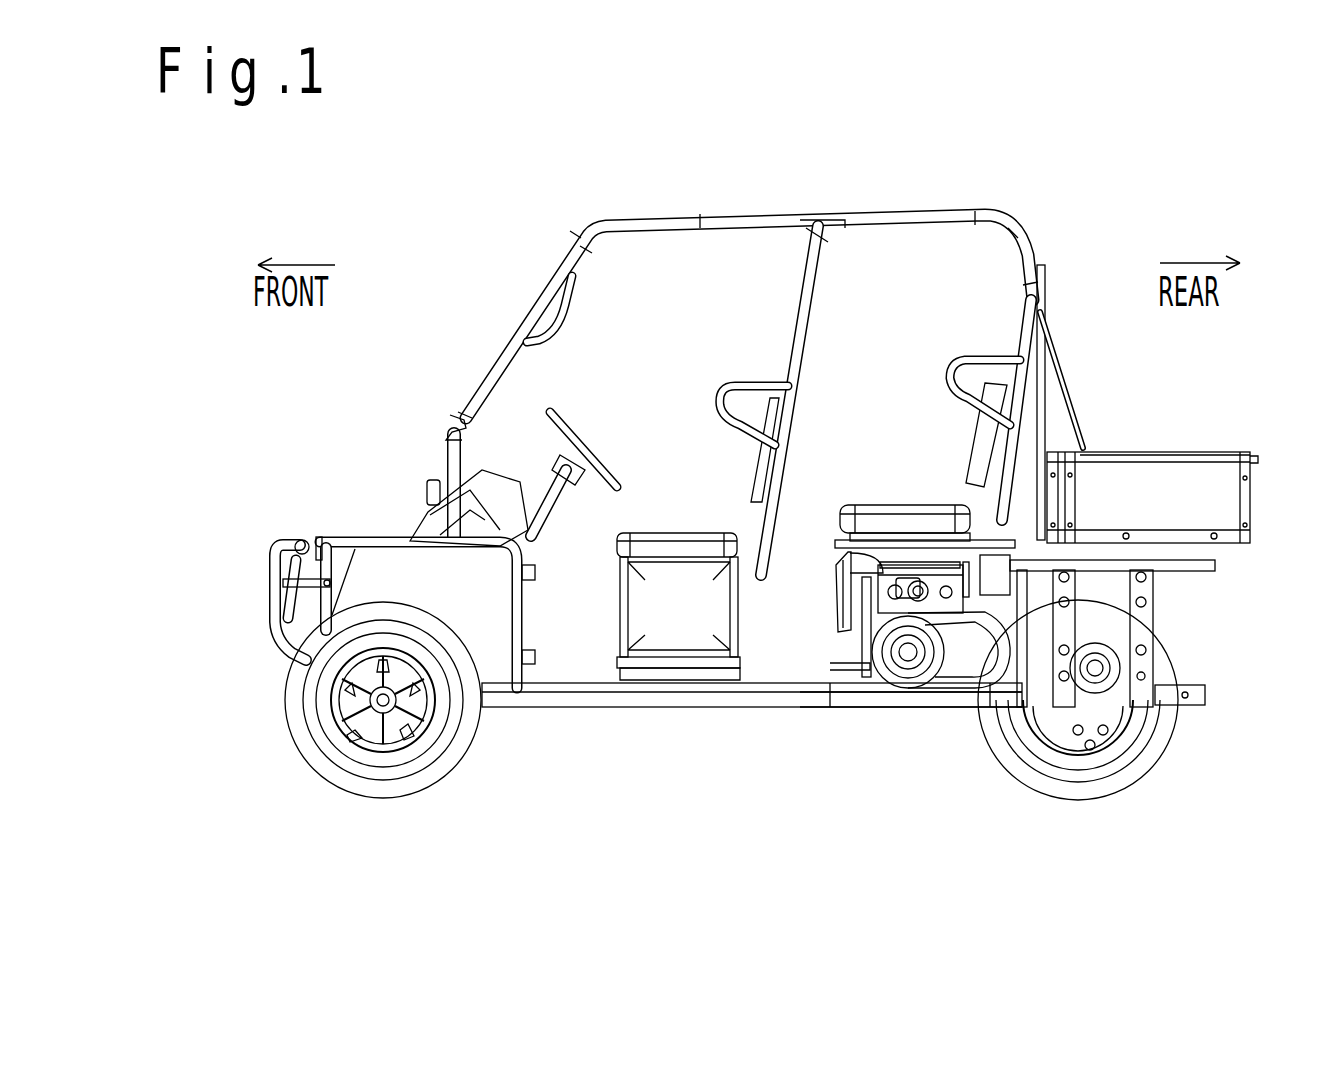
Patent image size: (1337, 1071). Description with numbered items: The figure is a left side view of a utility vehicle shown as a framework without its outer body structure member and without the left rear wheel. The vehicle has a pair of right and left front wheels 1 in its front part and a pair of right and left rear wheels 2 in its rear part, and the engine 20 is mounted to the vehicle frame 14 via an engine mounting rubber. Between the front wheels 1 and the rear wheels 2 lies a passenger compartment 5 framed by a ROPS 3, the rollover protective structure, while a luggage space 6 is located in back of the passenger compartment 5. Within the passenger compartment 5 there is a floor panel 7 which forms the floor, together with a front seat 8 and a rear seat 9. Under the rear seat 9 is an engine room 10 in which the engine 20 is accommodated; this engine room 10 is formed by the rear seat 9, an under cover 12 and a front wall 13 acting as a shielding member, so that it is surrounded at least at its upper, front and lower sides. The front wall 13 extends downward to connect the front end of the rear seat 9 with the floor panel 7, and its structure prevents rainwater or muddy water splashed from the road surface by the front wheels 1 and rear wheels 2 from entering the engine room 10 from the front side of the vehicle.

The front wheels 1 is at (298, 752).
The rear wheels 2 is at (1176, 740).
The ROPS 3 is at (588, 224).
The passenger compartment 5 is at (690, 256).
The luggage space 6 is at (1162, 466).
The floor panel 7 is at (582, 685).
The front seat 8 is at (666, 530).
The rear seat 9 is at (850, 506).
The engine room 10 is at (890, 537).
The under cover 12 is at (898, 713).
The front wall 13 is at (838, 580).
The vehicle frame 14 is at (908, 662).
The engine 20 is at (907, 583).